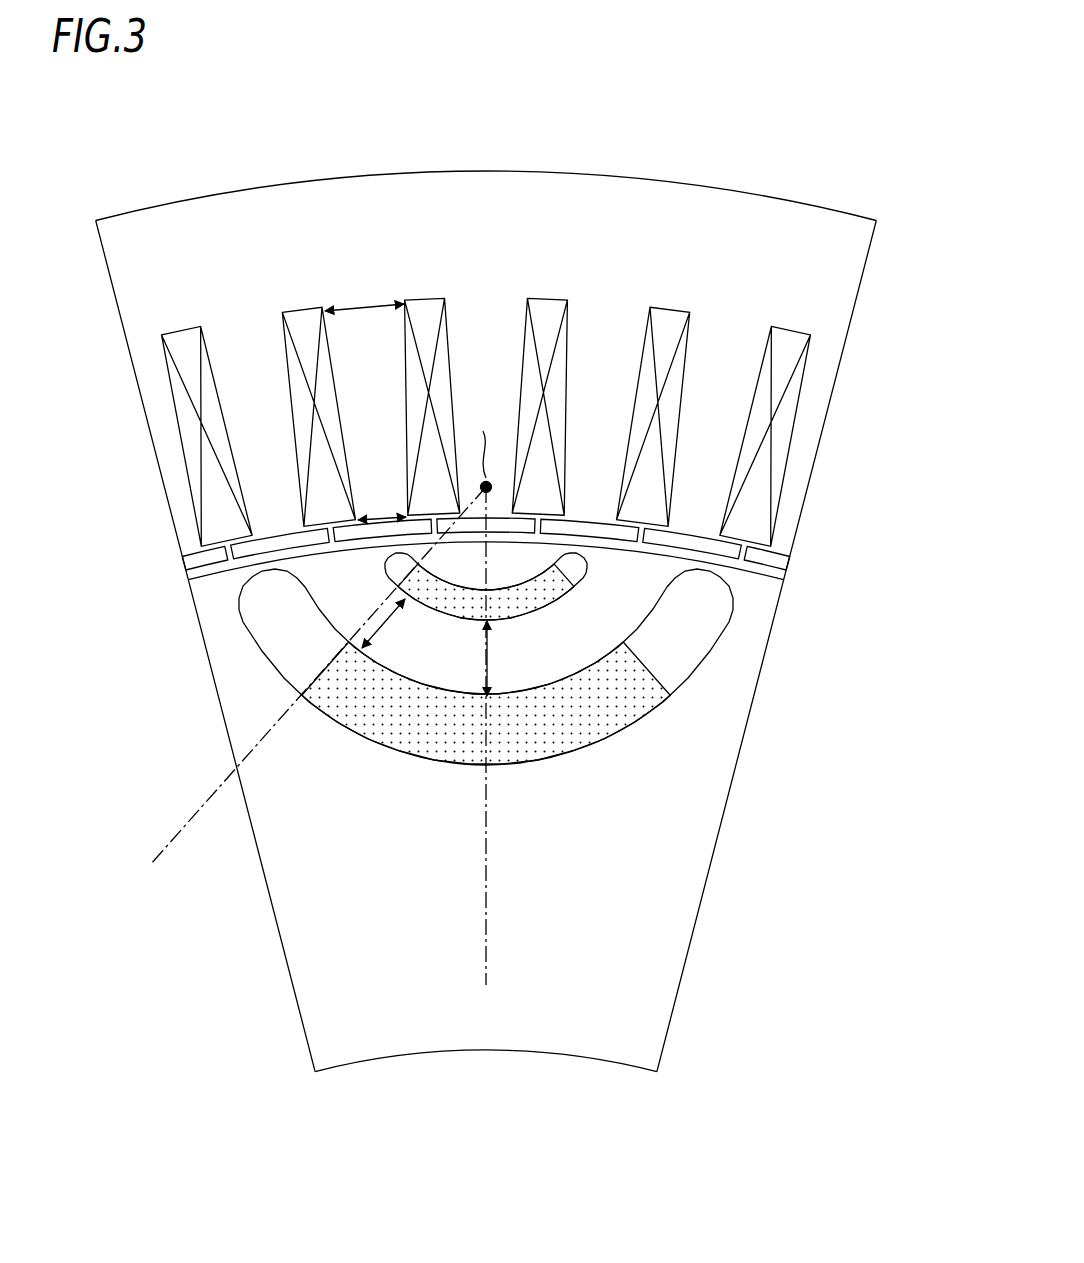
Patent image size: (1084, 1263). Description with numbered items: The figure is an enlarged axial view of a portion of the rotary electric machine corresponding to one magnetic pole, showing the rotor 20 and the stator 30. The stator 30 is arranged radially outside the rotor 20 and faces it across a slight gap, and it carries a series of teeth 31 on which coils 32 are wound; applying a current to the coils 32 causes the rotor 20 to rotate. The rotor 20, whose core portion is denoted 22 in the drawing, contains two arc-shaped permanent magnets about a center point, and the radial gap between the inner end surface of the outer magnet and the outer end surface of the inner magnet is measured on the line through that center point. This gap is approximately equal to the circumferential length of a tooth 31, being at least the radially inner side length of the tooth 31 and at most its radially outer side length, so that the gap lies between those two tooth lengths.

The rotor 20 is at (500, 738).
The rotor core 22 is at (666, 948).
The stator 30 is at (526, 346).
The tooth 31 is at (610, 340).
The coil 32 is at (547, 310).